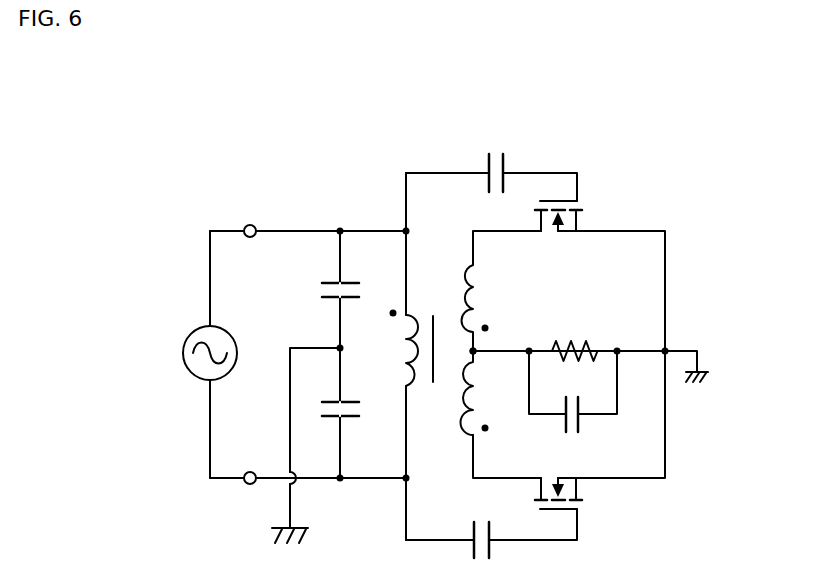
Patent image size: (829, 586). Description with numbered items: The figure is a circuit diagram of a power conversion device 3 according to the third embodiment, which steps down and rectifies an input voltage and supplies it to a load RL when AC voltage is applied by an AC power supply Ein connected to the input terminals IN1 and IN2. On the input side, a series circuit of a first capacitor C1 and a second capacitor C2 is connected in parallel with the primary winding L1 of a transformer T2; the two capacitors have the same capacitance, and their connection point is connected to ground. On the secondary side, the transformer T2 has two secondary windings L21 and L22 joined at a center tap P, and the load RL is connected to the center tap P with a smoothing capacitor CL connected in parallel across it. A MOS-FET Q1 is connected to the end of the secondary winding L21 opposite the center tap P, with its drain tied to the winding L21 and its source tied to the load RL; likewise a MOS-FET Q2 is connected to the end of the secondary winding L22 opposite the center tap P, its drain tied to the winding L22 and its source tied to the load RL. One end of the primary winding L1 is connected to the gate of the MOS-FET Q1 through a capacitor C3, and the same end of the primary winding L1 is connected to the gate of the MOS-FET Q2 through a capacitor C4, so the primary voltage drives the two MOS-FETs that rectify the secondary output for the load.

The power conversion device 3 is at (282, 133).
The input terminal IN1 is at (249, 221).
The input terminal IN2 is at (249, 468).
The AC power supply Ein is at (203, 339).
The first capacitor C1 is at (335, 278).
The second capacitor C2 is at (335, 398).
The capacitor C3 is at (479, 169).
The capacitor C4 is at (468, 544).
The transformer T2 is at (445, 350).
The primary winding L1 is at (398, 348).
The secondary winding L21 is at (488, 308).
The secondary winding L22 is at (487, 393).
The center tap P is at (466, 353).
The load RL is at (573, 339).
The smoothing capacitor CL is at (573, 397).
The MOS-FET Q1 is at (574, 216).
The MOS-FET Q2 is at (574, 493).